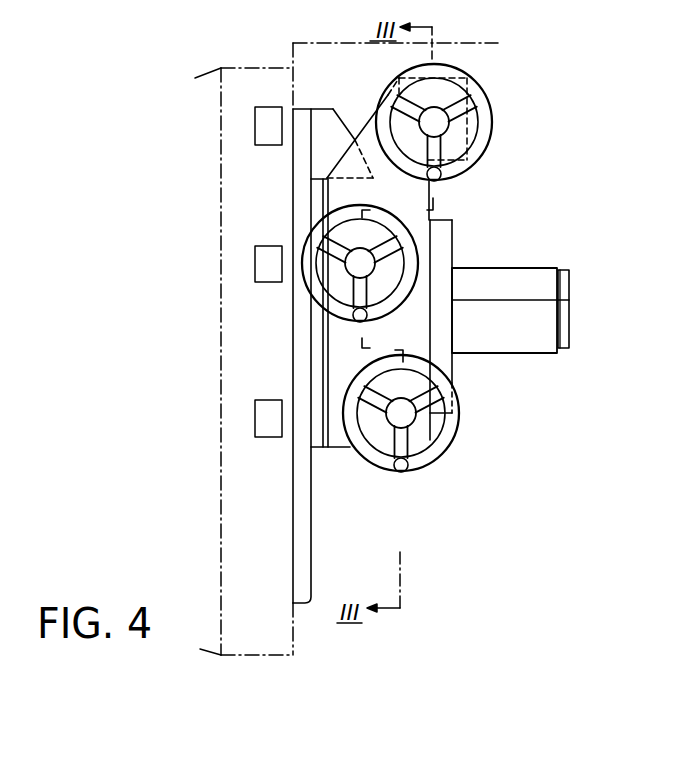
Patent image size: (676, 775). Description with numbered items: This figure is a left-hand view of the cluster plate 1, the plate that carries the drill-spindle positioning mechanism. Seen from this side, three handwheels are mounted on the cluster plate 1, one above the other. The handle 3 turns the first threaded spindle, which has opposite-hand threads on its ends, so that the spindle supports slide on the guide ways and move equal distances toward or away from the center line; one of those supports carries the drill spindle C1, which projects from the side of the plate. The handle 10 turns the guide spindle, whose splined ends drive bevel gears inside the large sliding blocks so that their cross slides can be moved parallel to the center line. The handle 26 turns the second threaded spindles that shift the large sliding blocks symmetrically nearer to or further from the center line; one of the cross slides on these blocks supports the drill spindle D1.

The cluster plate 1 is at (248, 77).
The handle 3 is at (322, 295).
The handle 10 is at (485, 132).
The handle 26 is at (437, 448).
The drill spindle C1 is at (517, 283).
The drill spindle D1 is at (517, 333).